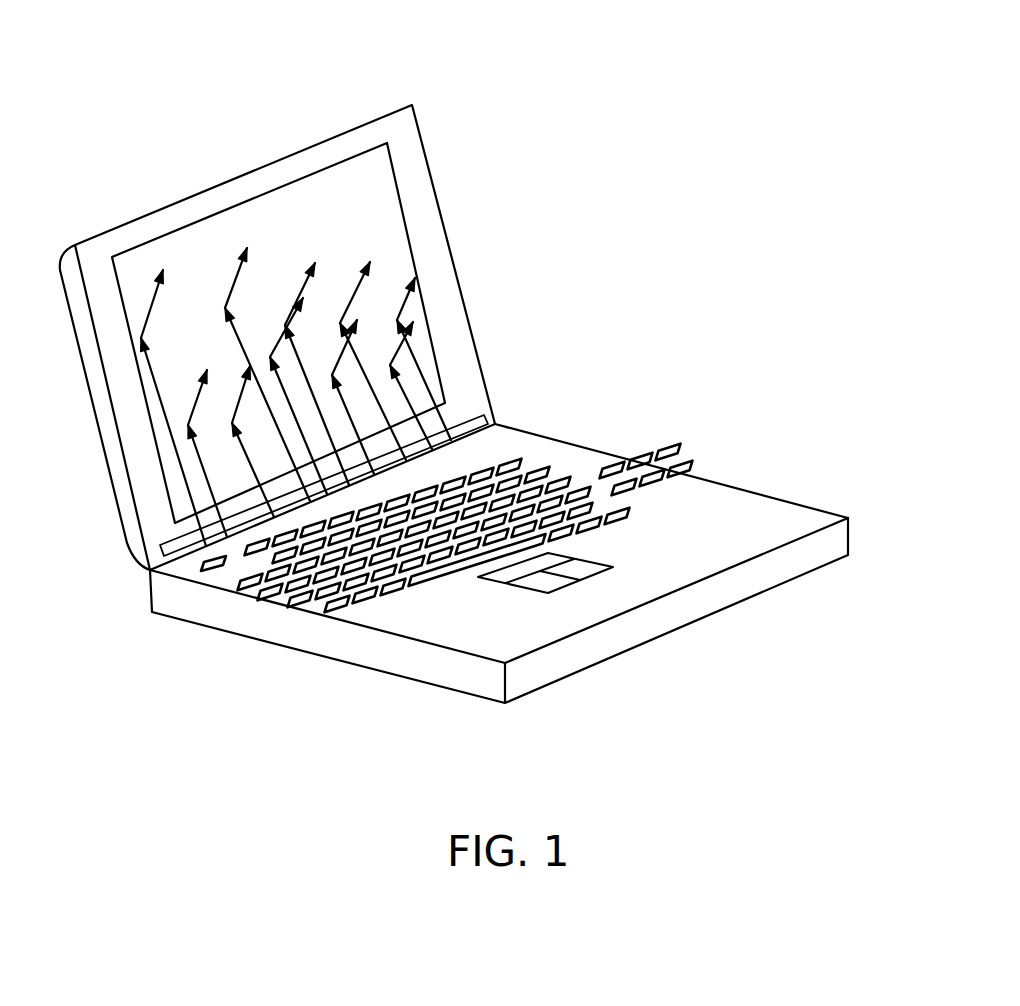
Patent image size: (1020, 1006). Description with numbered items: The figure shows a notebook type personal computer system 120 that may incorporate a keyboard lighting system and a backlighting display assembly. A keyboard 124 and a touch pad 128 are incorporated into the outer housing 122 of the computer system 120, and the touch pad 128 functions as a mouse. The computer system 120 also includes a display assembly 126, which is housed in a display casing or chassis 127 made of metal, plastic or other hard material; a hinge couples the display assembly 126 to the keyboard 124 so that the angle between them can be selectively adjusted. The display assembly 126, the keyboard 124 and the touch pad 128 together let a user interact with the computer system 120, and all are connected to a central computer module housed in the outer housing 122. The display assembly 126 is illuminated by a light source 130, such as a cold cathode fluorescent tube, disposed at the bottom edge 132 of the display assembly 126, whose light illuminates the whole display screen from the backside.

The computer system 120 is at (462, 112).
The outer housing 122 is at (848, 517).
The keyboard 124 is at (600, 455).
The display assembly 126 is at (403, 258).
The display casing or chassis 127 is at (303, 337).
The touch pad 128 is at (523, 580).
The light source 130 is at (480, 412).
The bottom edge 132 is at (510, 420).